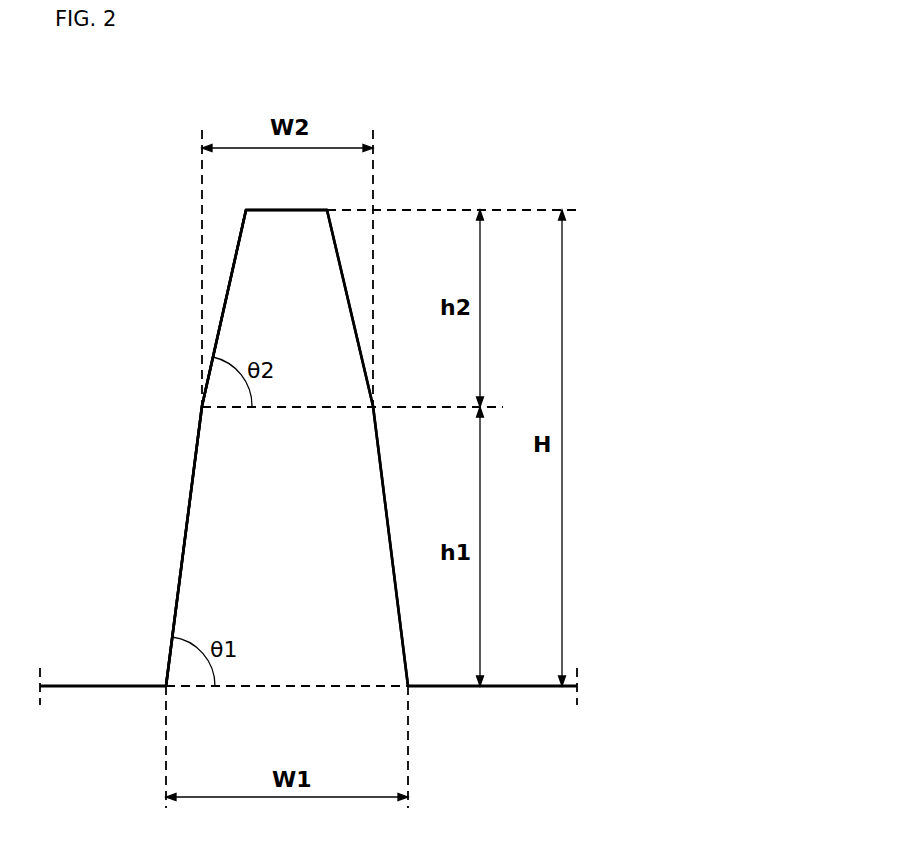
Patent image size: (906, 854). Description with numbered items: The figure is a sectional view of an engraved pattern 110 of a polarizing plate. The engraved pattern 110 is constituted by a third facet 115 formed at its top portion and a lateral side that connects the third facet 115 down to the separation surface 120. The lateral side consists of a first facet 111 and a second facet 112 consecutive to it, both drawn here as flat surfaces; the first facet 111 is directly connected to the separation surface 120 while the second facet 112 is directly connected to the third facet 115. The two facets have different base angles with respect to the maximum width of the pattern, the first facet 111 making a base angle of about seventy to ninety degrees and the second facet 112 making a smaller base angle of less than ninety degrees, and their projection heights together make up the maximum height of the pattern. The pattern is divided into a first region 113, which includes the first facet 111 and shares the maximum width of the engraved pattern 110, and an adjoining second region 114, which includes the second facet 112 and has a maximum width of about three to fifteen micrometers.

The engraved pattern 110 is at (397, 137).
The first facet 111 is at (175, 607).
The second facet 112 is at (218, 328).
The first region 113 is at (210, 510).
The second region 114 is at (250, 260).
The third facet 115 is at (318, 210).
The separation surface 120 is at (87, 687).